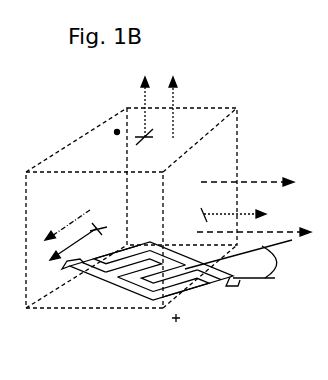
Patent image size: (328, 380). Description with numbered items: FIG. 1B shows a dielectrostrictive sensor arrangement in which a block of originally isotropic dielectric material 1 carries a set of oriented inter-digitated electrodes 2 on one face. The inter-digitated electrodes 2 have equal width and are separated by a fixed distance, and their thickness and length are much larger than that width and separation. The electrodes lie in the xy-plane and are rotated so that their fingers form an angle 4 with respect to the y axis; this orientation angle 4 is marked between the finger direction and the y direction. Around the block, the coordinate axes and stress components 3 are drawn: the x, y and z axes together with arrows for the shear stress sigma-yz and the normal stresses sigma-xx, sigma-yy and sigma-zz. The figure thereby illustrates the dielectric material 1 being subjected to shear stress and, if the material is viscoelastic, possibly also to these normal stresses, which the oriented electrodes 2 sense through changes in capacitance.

The dielectric material 1 is at (117, 132).
The oriented interdigitated electrodes 2 is at (122, 293).
The coordinate axes and stress components 3 is at (179, 165).
The electrode orientation angle θ 4 is at (238, 259).